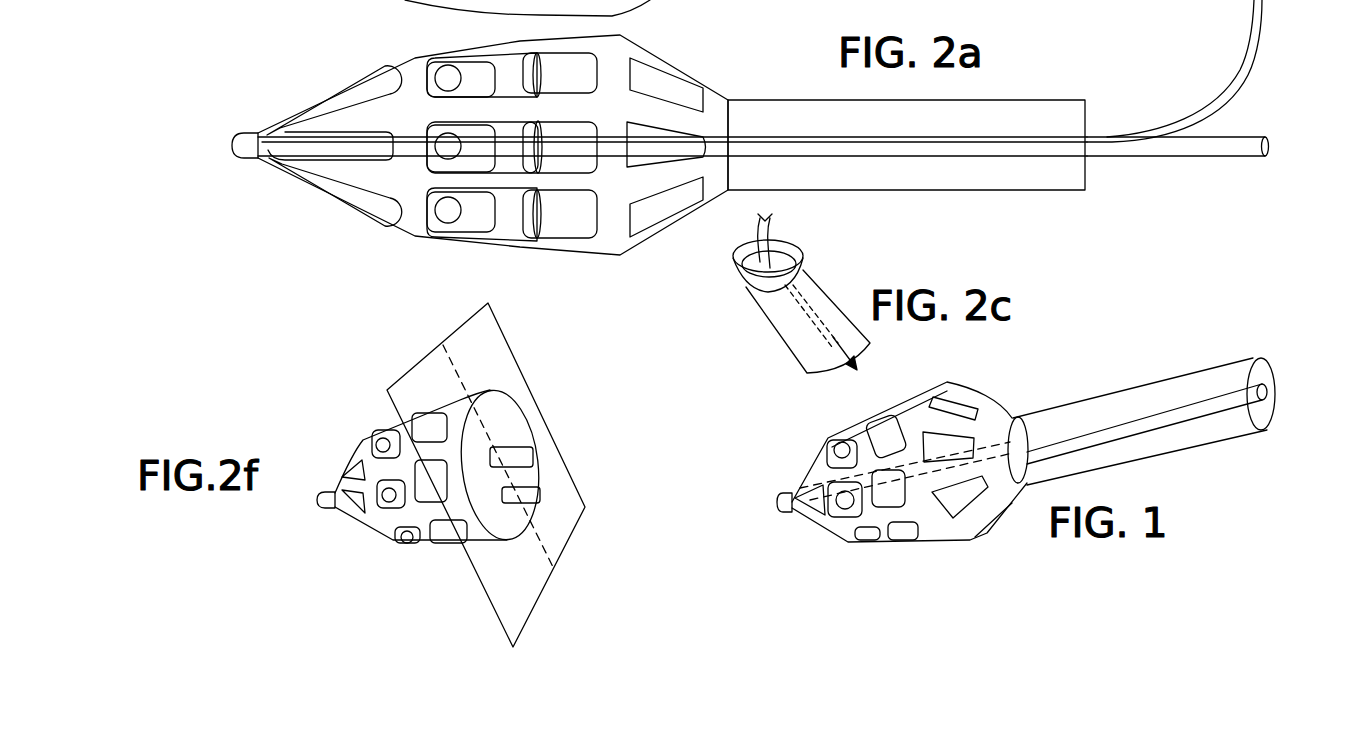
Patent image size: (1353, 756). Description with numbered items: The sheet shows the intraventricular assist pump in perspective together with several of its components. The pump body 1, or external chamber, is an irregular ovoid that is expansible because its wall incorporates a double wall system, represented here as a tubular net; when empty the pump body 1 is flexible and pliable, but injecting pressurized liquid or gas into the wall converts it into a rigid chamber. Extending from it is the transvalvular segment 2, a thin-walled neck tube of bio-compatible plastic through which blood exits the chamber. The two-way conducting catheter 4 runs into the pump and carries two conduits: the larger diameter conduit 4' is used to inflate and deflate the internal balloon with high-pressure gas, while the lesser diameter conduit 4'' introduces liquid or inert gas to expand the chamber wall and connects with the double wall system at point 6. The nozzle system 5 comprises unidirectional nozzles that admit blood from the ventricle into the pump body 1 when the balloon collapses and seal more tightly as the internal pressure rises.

In FIG. 2A, the pump body 1 is at (405, 220).
In FIG. 1, the pump body 1 is at (967, 543).
In FIG. 2F, the pump body 1 is at (357, 447).
In FIG. 2A, the transvalvular segment 2 is at (1050, 178).
In FIG. 1, the transvalvular segment 2 is at (1121, 405).
In FIG. 2A, the two-way conducting catheter 4 is at (701, 182).
In FIG. 1, the two-way conducting catheter 4 is at (1180, 418).
In FIG. 2A, the larger diameter conduit 4' is at (1178, 174).
In FIG. 2A, the lesser diameter conduit 4'' is at (1174, 71).
In FIG. 2A, the nozzle system 5 is at (450, 76).
In FIG. 2C, the nozzle system 5 is at (798, 253).
In FIG. 1, the nozzle system 5 is at (837, 492).
In FIG. 2F, the nozzle system 5 is at (388, 505).
In FIG. 2A, the connection point 6 is at (230, 144).
In FIG. 1, the connection point 6 is at (777, 503).
In FIG. 2F, the connection point 6 is at (325, 507).